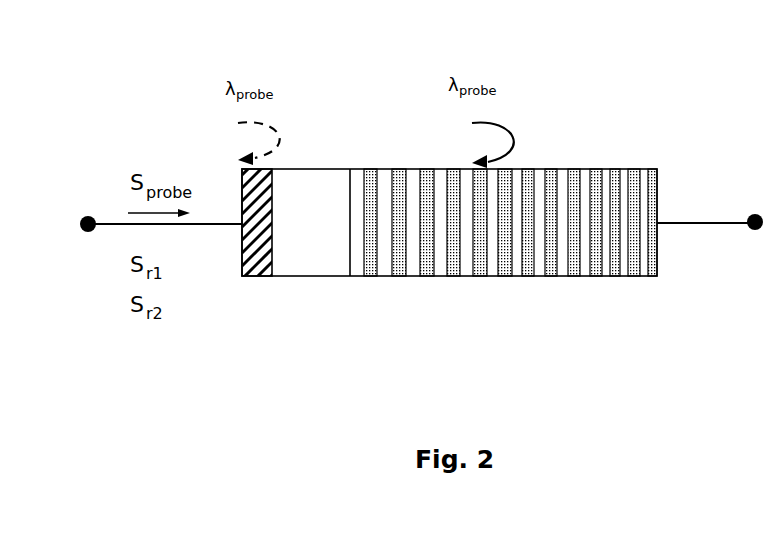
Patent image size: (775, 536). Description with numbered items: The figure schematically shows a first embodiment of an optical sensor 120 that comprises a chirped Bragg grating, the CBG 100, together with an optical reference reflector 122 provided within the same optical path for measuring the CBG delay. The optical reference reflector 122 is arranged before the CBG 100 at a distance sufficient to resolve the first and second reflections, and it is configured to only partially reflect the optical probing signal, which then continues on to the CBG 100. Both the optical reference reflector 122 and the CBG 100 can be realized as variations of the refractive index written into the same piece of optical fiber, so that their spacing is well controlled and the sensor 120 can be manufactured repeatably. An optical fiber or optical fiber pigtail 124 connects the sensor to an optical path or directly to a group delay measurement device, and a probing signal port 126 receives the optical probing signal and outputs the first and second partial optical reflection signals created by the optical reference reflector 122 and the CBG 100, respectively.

The optical sensor 120 is at (393, 70).
The CBG 100 is at (574, 160).
The optical reference reflector 122 is at (241, 278).
The optical fiber pigtail 124 is at (108, 222).
The probing signal port 126 is at (85, 233).